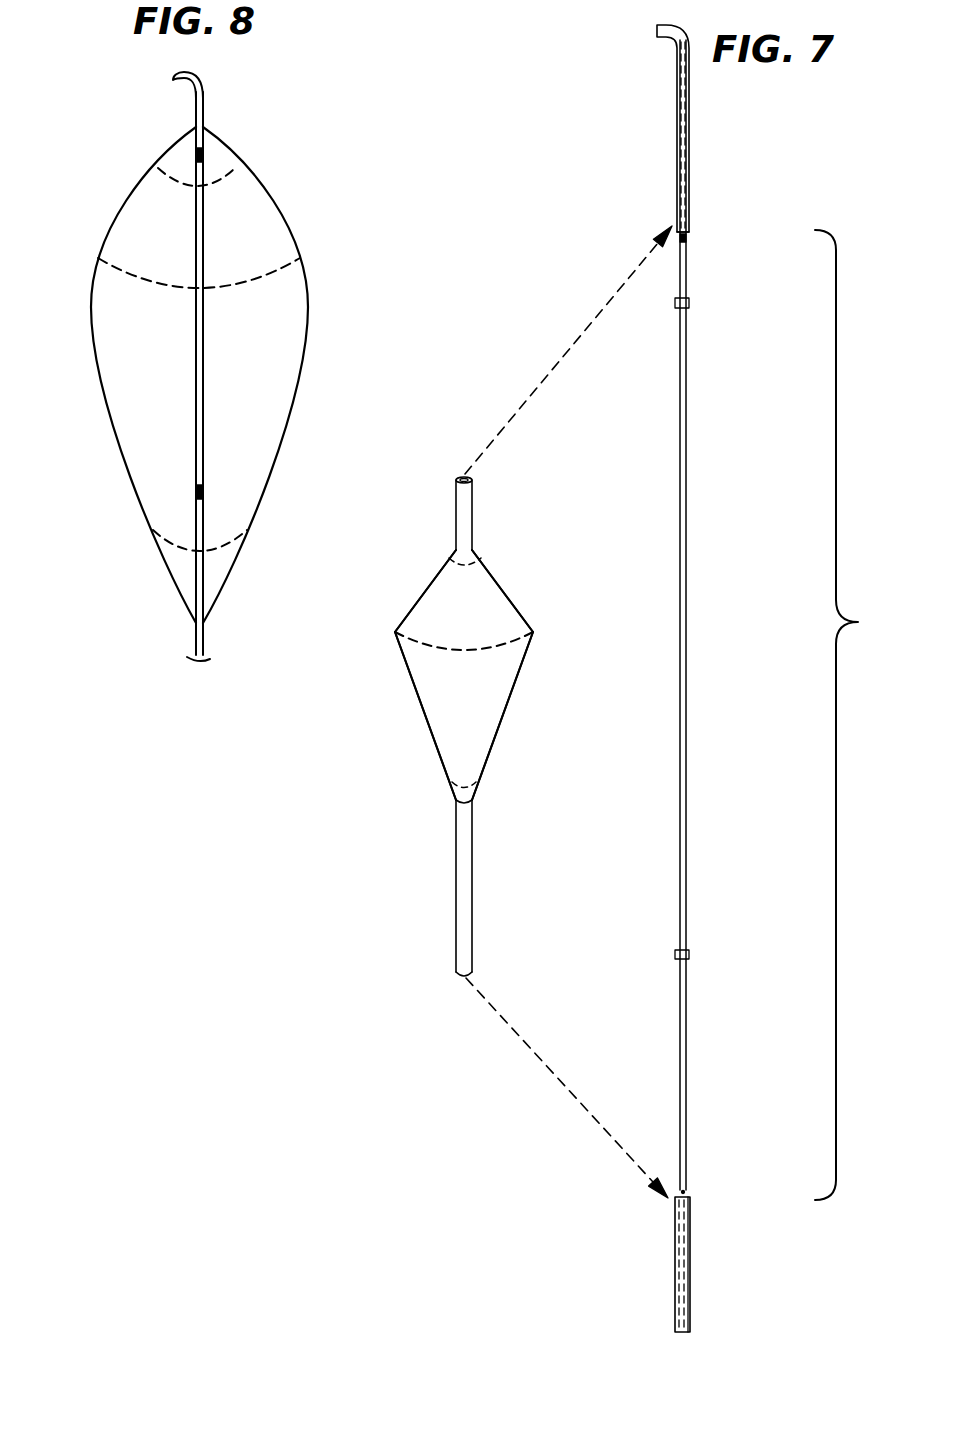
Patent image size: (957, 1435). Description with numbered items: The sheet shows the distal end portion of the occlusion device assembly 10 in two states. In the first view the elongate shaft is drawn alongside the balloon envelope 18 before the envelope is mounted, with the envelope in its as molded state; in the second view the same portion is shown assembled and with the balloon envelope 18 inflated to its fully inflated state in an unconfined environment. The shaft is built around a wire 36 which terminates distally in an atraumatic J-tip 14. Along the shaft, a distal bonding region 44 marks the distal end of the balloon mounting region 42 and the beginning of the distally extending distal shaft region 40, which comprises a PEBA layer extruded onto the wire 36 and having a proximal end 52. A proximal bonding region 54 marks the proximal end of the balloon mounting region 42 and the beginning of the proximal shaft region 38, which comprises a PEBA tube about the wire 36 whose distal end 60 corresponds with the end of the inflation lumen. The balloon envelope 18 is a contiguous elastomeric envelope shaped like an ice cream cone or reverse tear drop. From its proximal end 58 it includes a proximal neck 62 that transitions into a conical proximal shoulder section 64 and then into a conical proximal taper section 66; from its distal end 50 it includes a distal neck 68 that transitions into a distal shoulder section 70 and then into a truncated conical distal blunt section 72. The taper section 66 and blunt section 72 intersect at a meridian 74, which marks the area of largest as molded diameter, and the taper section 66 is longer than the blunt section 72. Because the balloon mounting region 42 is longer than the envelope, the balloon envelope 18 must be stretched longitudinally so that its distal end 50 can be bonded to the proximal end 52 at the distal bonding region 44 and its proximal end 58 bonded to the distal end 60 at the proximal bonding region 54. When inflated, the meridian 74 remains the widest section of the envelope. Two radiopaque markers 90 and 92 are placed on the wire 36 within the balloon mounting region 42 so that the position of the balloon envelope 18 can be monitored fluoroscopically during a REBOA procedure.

In FIG. 8, the assembly 10 is at (105, 186).
In FIG. 8, the hook tip 14 is at (192, 74).
In FIG. 8, the balloon envelope 18 is at (305, 345).
In FIG. 7, the balloon envelope 18 is at (415, 675).
In FIG. 8, the wire 36 is at (196, 378).
In FIG. 7, the wire 36 is at (712, 504).
In FIG. 7, the proximal shaft region 38 is at (676, 1296).
In FIG. 7, the distal shaft region 40 is at (689, 110).
In FIG. 7, the balloon mounting region 42 is at (854, 715).
In FIG. 7, the distal bonding region 44 is at (689, 226).
In FIG. 7, the distal end 50 is at (456, 478).
In FIG. 7, the proximal end 52 is at (687, 240).
In FIG. 7, the proximal bonding region 54 is at (690, 1210).
In FIG. 7, the proximal end 58 is at (460, 978).
In FIG. 7, the distal end 60 is at (686, 1192).
In FIG. 7, the proximal neck 62 is at (470, 900).
In FIG. 7, the conical proximal shoulder section 64 is at (453, 792).
In FIG. 7, the conical proximal taper section 66 is at (488, 735).
In FIG. 7, the distal neck 68 is at (472, 514).
In FIG. 7, the distal shoulder section 70 is at (458, 561).
In FIG. 7, the truncated conical distal blunt section 72 is at (500, 592).
In FIG. 8, the meridian 74 is at (300, 260).
In FIG. 7, the meridian 74 is at (395, 632).
In FIG. 8, the radiopaque marker 90 is at (205, 150).
In FIG. 7, the radiopaque marker 90 is at (689, 303).
In FIG. 8, the radiopaque marker 92 is at (203, 500).
In FIG. 7, the radiopaque marker 92 is at (689, 954).